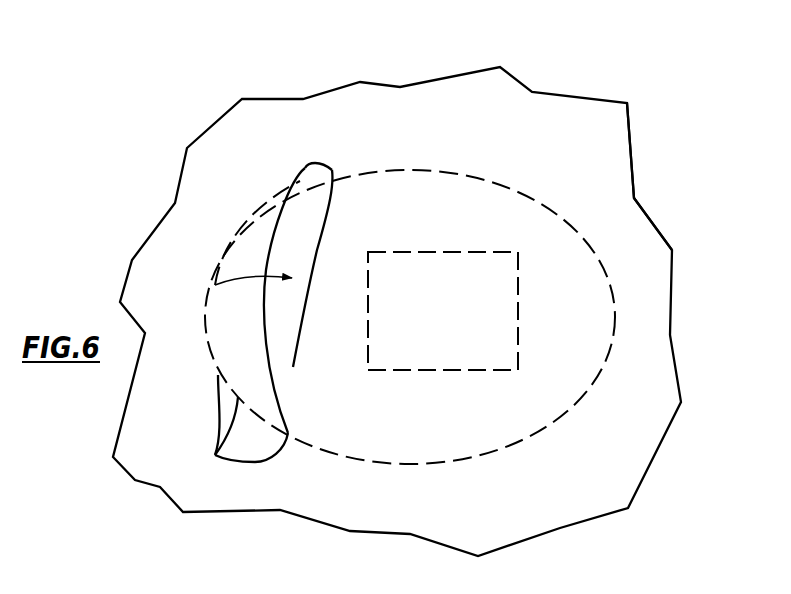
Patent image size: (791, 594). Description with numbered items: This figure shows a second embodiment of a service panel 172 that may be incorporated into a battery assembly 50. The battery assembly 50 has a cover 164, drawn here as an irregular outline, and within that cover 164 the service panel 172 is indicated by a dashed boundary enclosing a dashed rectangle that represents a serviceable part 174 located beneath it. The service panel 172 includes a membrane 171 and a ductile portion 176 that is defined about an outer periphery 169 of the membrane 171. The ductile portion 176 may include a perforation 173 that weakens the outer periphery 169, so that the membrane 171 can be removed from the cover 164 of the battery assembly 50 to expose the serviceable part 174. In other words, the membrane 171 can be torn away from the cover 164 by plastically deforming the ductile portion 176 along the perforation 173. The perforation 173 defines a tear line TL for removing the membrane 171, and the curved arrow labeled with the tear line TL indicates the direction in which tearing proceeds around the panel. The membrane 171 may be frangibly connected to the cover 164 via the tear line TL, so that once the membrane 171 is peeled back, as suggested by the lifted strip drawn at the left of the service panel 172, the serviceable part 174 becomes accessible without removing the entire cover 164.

The battery assembly 50 is at (397, 287).
The cover 164 is at (640, 240).
The outer periphery 169 is at (311, 162).
The membrane 171 is at (315, 200).
The service panel 172 is at (516, 180).
The perforation 173 is at (217, 453).
The serviceable part 174 is at (430, 372).
The ductile portion 176 is at (247, 214).
The tear line TL is at (205, 323).